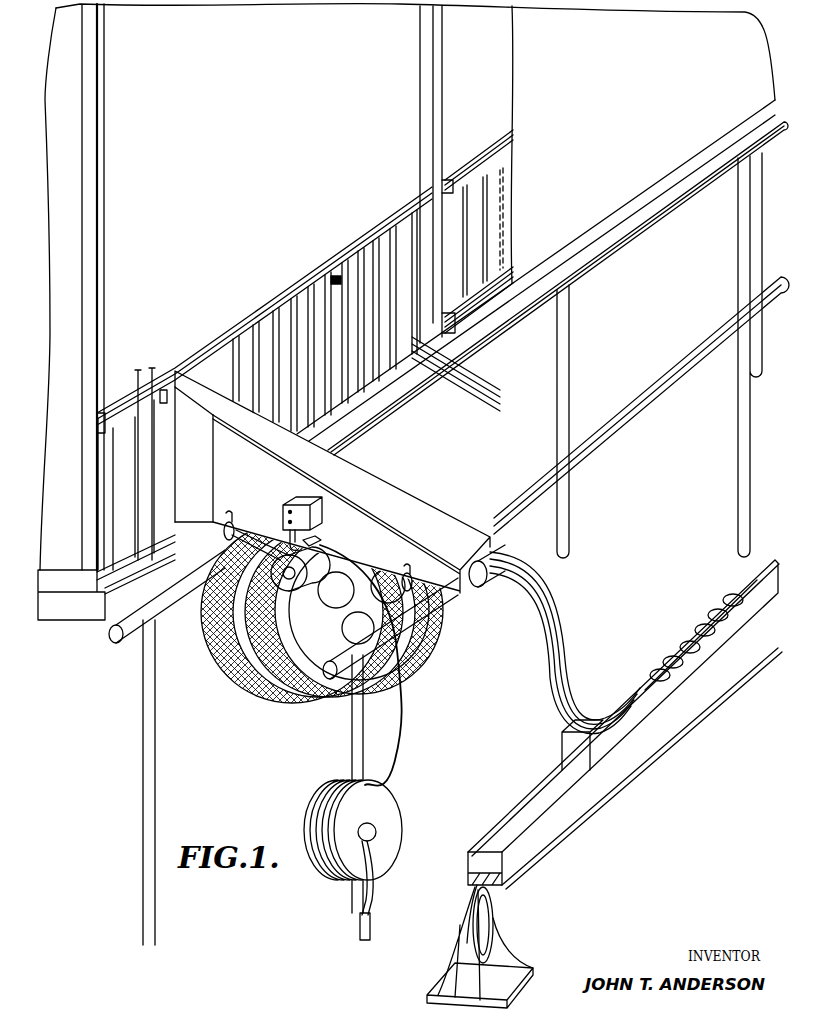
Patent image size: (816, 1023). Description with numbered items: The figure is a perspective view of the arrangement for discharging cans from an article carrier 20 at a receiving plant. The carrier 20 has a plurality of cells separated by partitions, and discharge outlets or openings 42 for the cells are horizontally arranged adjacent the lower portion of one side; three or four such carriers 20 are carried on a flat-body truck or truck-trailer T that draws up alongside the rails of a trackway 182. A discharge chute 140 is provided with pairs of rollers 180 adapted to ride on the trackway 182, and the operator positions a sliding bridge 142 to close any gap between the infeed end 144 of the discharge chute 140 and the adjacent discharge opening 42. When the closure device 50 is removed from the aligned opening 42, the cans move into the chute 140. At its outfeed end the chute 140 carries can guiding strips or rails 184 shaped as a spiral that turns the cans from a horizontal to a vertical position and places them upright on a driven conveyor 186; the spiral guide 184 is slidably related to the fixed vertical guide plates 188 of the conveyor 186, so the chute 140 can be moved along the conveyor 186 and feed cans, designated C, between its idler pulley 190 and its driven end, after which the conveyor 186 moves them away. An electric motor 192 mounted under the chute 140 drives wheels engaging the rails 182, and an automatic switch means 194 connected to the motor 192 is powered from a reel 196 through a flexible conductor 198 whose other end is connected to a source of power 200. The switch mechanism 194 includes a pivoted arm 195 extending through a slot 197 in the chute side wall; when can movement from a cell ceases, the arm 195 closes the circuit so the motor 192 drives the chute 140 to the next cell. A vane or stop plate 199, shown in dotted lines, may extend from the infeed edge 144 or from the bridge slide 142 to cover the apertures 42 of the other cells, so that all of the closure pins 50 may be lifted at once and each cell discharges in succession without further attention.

The carrier 20 is at (496, 76).
The truck T is at (624, 213).
The vane or stop plate 199 is at (335, 270).
The discharge outlets or openings 42 is at (163, 390).
The closure device 50 is at (140, 430).
The discharge chute 140 is at (416, 487).
The sliding bridge 142 is at (185, 402).
The infeed end 144 is at (213, 445).
The trackway 182 is at (167, 602).
The electric motor 192 is at (300, 592).
The pairs of rollers 180 is at (231, 522).
The automatic switch means 194 is at (307, 503).
The pivoted arm 195 is at (312, 520).
The slot 197 is at (318, 546).
The flexible conductor 198 is at (402, 703).
The reel 196 is at (378, 810).
The source of power 200 is at (374, 880).
The can guiding strips or rails 184 is at (556, 584).
The fixed vertical guide plates 188 is at (523, 800).
The driven conveyor 186 is at (666, 670).
The cable coils C is at (697, 624).
The idler pulley 190 is at (470, 917).